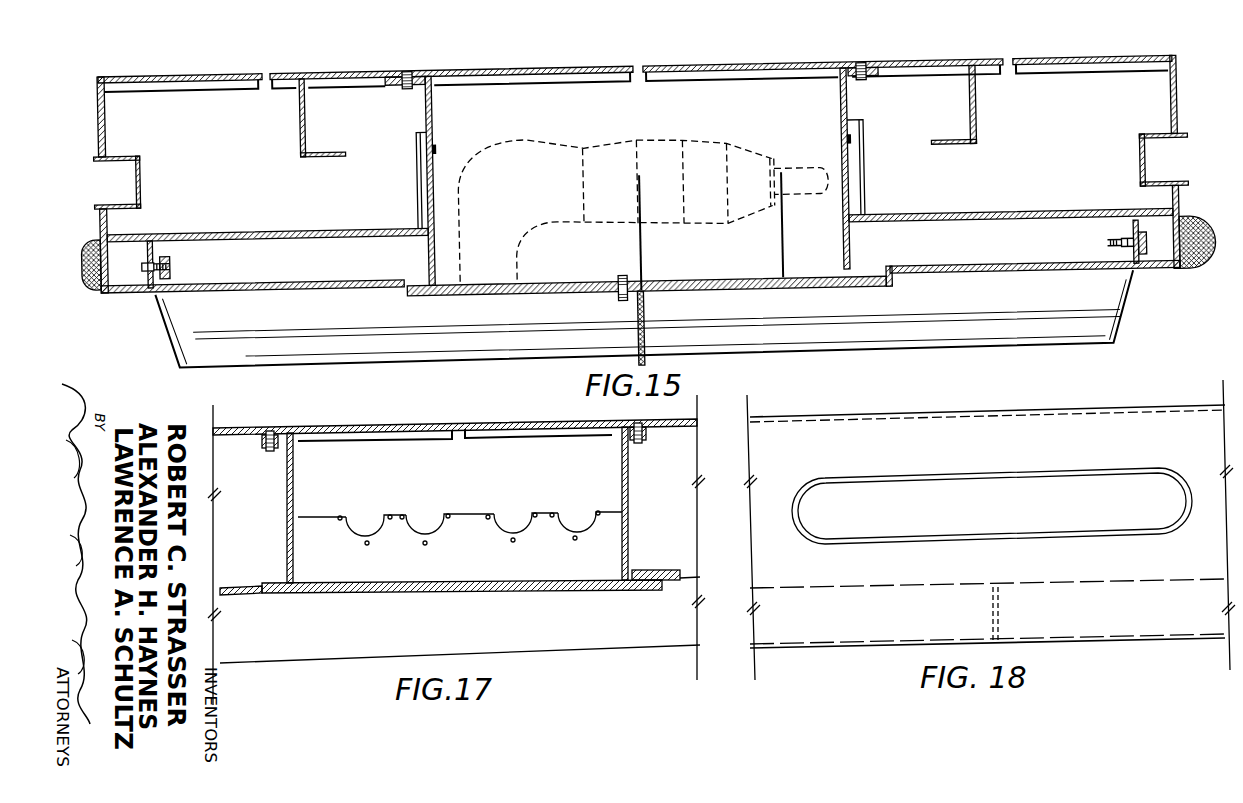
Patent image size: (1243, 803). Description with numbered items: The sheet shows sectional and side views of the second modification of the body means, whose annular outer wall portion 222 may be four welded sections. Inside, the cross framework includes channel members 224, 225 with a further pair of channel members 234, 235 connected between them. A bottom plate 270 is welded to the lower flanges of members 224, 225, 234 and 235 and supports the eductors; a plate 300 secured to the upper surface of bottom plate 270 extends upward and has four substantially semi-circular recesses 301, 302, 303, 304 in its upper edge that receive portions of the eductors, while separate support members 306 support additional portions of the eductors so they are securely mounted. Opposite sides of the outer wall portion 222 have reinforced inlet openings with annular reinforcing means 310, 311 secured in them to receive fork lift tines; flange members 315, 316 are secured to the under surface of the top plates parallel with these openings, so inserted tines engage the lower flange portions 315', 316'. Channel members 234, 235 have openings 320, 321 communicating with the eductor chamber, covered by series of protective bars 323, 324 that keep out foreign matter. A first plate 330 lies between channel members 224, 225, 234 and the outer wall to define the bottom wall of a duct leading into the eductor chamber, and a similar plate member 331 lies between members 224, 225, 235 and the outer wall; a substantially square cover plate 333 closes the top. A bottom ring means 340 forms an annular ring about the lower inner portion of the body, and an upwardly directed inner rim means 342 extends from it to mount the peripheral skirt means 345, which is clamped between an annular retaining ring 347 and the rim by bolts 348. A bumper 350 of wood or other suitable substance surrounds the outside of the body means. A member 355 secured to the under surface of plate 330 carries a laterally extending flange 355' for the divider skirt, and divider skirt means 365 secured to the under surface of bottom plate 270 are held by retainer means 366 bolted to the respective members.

In FIG. 15, the outer wall portion 222 is at (99, 107).
In FIG. 17, the channel member 224 is at (287, 494).
In FIG. 17, the channel member 225 is at (628, 490).
In FIG. 15, the channel member 234 is at (431, 107).
In FIG. 15, the channel member 235 is at (840, 108).
In FIG. 15, the bottom plate 270 is at (538, 294).
In FIG. 17, the bottom plate 270 is at (344, 591).
In FIG. 15, the plate 300 is at (639, 258).
In FIG. 17, the plate 300 is at (455, 570).
In FIG. 17, the semi-circular recess 301 is at (349, 517).
In FIG. 17, the semi-circular recess 302 is at (409, 516).
In FIG. 17, the semi-circular recess 303 is at (497, 515).
In FIG. 17, the semi-circular recess 304 is at (561, 514).
In FIG. 15, the support member 306 is at (781, 261).
In FIG. 15, the annular reinforcing means 310 is at (104, 159).
In FIG. 18, the annular reinforcing means 310 is at (1120, 478).
In FIG. 15, the annular reinforcing means 311 is at (1159, 154).
In FIG. 15, the flange member 315 is at (326, 117).
In FIG. 15, the lower flange portion 315' is at (332, 168).
In FIG. 15, the flange member 316 is at (996, 103).
In FIG. 15, the lower flange portion 316' is at (961, 151).
In FIG. 15, the opening 320 is at (434, 157).
In FIG. 15, the opening 321 is at (845, 155).
In FIG. 15, the protective bars 323 is at (414, 146).
In FIG. 15, the protective bars 324 is at (862, 166).
In FIG. 15, the first plate 330 is at (253, 235).
In FIG. 18, the first plate 330 is at (1097, 581).
In FIG. 15, the plate member 331 is at (1038, 230).
In FIG. 15, the cover plate 333 is at (640, 78).
In FIG. 17, the cover plate 333 is at (383, 424).
In FIG. 15, the bottom ring means 340 is at (115, 293).
In FIG. 15, the inner rim means 342 is at (149, 249).
In FIG. 15, the skirt means 345 is at (1121, 312).
In FIG. 15, the retaining ring 347 is at (166, 274).
In FIG. 15, the bolts 348 is at (146, 266).
In FIG. 15, the bumper 350 is at (83, 248).
In FIG. 18, the member 355 is at (1023, 614).
In FIG. 18, the laterally extending flange 355' is at (987, 652).
In FIG. 15, the divider skirt means 365 is at (640, 321).
In FIG. 15, the retainer means 366 is at (613, 308).